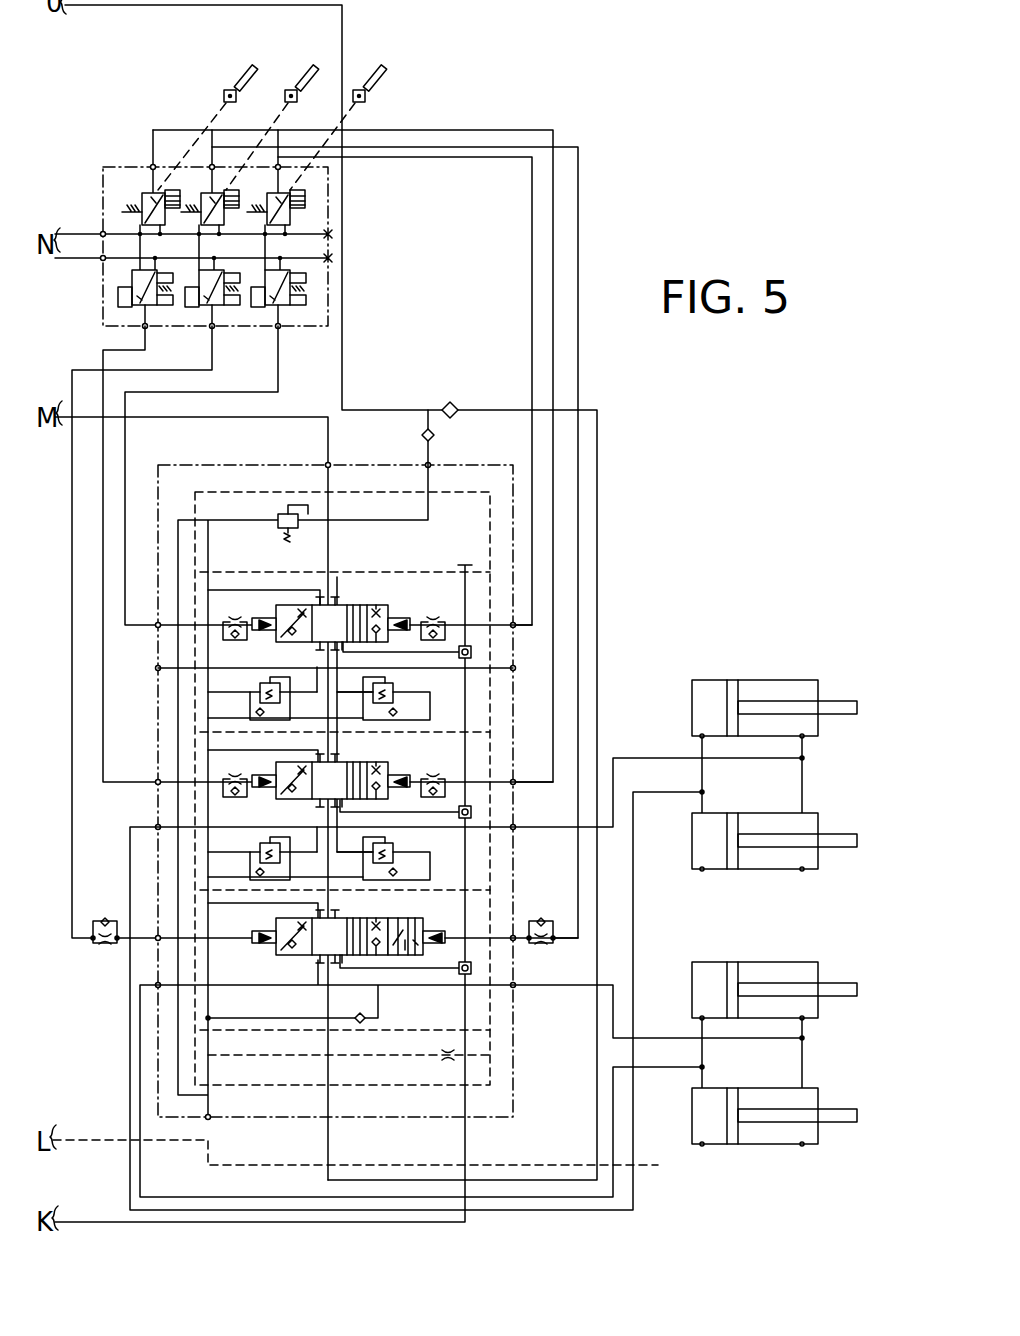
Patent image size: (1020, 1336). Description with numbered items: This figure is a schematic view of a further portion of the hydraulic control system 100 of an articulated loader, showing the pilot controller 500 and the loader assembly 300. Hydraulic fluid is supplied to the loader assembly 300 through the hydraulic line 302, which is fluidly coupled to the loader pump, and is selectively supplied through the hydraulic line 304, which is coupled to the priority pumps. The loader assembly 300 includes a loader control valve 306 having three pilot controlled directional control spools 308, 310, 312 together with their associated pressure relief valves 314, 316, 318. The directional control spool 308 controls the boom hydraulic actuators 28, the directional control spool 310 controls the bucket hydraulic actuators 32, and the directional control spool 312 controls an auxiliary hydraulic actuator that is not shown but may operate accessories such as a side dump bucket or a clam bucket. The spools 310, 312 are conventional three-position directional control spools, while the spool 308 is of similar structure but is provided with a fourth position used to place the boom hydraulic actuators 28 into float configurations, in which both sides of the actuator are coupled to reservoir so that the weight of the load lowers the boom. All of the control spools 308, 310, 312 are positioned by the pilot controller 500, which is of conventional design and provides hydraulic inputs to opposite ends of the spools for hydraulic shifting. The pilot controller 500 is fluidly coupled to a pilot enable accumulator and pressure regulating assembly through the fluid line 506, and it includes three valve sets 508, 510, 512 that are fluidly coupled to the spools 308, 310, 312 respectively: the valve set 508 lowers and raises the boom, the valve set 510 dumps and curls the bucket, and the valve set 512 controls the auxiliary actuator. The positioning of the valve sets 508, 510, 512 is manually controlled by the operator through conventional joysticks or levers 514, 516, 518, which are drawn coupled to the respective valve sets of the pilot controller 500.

The hydraulic control system 100 is at (509, 1219).
The loader assembly 300 is at (751, 954).
The hydraulic line 302 is at (116, 6).
The hydraulic line 304 is at (65, 421).
The loader control valve 306 is at (446, 793).
The directional control spool 308 is at (442, 948).
The directional control spool 310 is at (388, 766).
The directional control spool 312 is at (388, 608).
The pressure relief valve 314 is at (438, 861).
The pressure relief valve 316 is at (438, 702).
The pressure relief valve 318 is at (339, 535).
The pilot controller 500 is at (316, 481).
The fluid line 506 is at (83, 233).
The valve set 508 is at (221, 334).
The valve set 510 is at (156, 334).
The valve set 512 is at (288, 334).
The joystick or lever 514 is at (312, 66).
The joystick or lever 516 is at (268, 52).
The joystick or lever 518 is at (395, 52).
The bucket hydraulic actuators 32 is at (690, 698).
The boom hydraulic actuators 28 is at (690, 993).